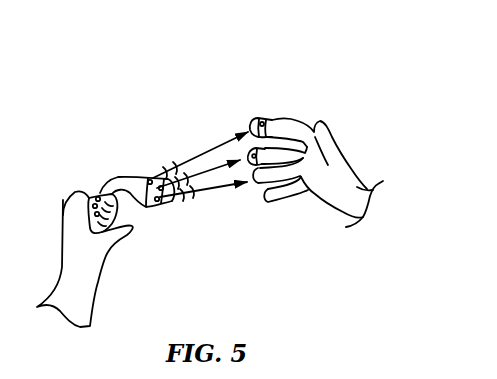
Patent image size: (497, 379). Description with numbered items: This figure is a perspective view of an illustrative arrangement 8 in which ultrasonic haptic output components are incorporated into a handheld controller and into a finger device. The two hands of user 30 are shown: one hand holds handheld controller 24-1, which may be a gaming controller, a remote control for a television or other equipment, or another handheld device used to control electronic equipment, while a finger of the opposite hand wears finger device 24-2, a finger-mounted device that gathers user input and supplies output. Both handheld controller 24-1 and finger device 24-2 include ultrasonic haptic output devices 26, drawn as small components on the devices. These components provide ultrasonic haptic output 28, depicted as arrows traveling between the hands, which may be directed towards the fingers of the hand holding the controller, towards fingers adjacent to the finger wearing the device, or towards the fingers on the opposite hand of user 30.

The system 8 is at (134, 103).
The handheld controller 24-1 is at (118, 177).
The finger device 24-2 is at (277, 122).
The ultrasonic haptic output devices 26 is at (88, 197).
The ultrasonic haptic output 28 is at (247, 153).
The user 30 is at (62, 282).